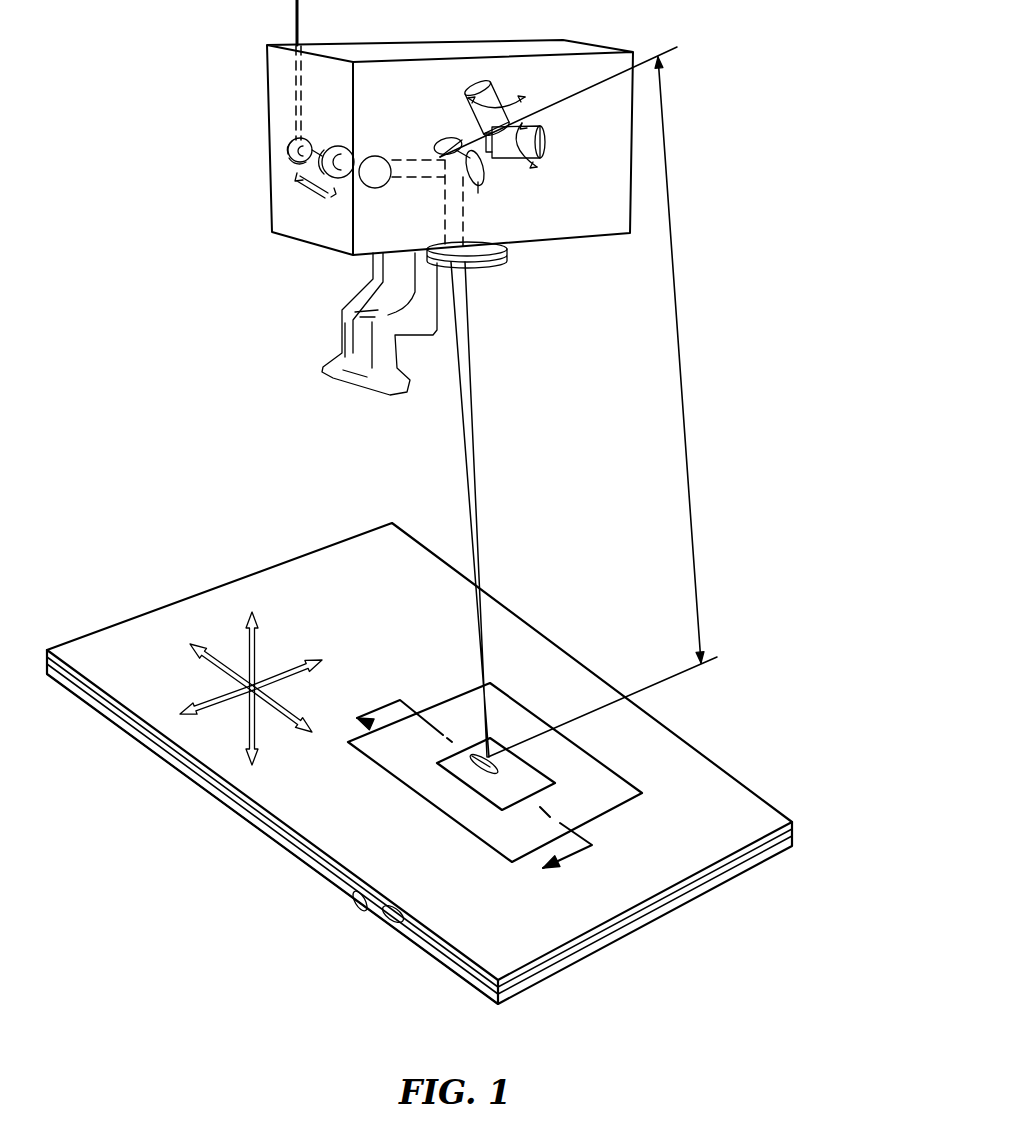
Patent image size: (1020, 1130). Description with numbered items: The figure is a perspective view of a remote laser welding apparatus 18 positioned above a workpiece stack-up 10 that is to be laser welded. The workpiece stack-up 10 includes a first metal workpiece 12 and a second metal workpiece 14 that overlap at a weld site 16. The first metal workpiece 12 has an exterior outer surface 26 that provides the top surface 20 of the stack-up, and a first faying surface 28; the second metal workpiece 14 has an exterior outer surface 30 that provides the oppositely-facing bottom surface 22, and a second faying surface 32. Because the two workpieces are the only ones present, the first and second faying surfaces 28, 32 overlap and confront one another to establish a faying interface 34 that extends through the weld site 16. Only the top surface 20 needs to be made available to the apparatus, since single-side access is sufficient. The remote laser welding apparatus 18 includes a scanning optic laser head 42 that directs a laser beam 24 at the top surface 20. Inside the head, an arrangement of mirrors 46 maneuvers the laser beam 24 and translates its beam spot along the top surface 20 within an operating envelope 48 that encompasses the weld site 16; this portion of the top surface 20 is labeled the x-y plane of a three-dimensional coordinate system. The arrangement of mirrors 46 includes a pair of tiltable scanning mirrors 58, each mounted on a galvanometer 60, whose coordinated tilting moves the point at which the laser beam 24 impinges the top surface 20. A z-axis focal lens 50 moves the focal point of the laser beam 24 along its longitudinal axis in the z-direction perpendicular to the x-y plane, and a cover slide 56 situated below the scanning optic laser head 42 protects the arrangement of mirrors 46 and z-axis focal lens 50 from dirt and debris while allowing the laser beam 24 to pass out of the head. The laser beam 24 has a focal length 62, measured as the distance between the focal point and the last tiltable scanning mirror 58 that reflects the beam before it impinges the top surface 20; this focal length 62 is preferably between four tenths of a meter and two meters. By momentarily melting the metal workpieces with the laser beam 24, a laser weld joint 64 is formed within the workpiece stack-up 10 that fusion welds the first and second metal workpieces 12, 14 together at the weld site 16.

The workpiece stack-up 10 is at (195, 798).
The first metal workpiece 12 is at (262, 813).
The second metal workpiece 14 is at (275, 835).
The weld site 16 is at (470, 770).
The remote laser welding apparatus 18 is at (248, 213).
The top surface 20 is at (730, 822).
The bottom surface 22 is at (683, 915).
The laser beam 24 is at (478, 420).
The exterior outer surface 26 is at (357, 852).
The first faying surface 28 is at (370, 913).
The exterior outer surface 30 is at (438, 960).
The second faying surface 32 is at (387, 912).
The faying interface 34 is at (330, 880).
The scanning optic laser head 42 is at (267, 92).
The arrangement of mirrors 46 is at (432, 138).
The operating envelope 48 is at (463, 693).
The z-axis focal lens 50 is at (343, 180).
The cover slide 56 is at (505, 262).
The tiltable scanning mirrors 58 is at (447, 137).
The galvanometer 60 is at (508, 97).
The focal length 62 is at (678, 345).
The laser weld joint 64 is at (480, 762).